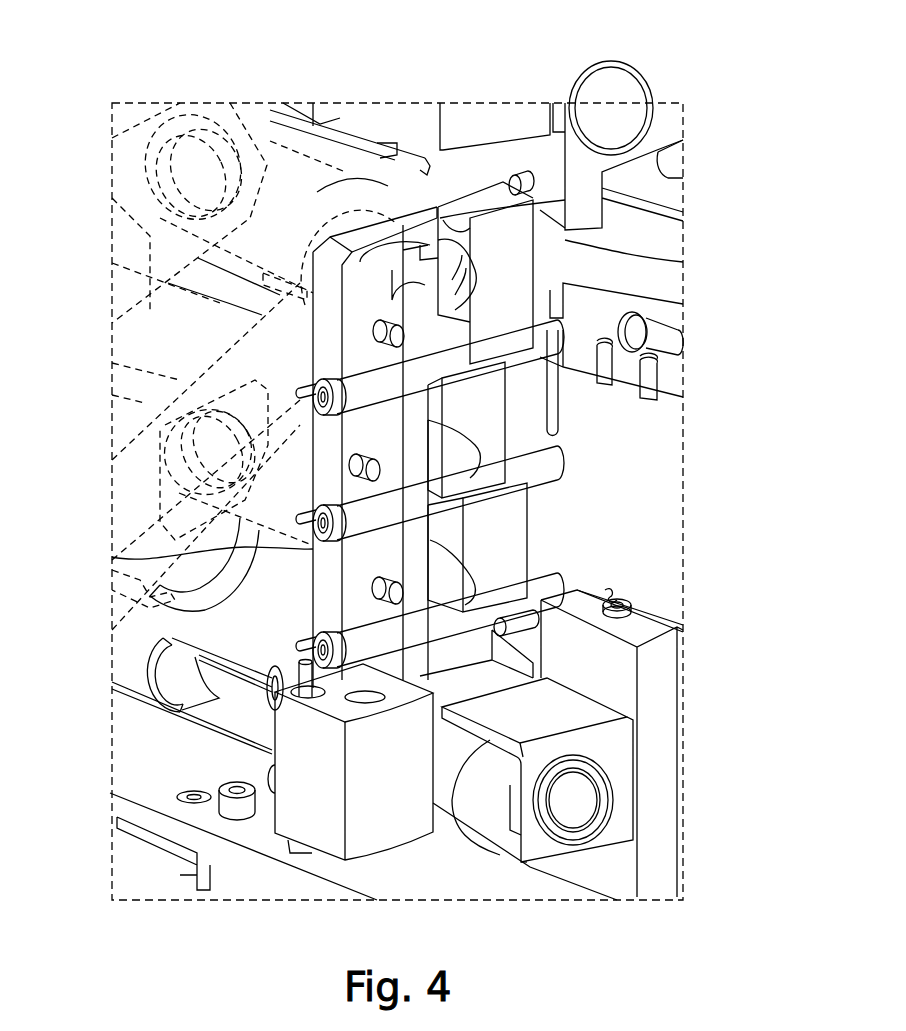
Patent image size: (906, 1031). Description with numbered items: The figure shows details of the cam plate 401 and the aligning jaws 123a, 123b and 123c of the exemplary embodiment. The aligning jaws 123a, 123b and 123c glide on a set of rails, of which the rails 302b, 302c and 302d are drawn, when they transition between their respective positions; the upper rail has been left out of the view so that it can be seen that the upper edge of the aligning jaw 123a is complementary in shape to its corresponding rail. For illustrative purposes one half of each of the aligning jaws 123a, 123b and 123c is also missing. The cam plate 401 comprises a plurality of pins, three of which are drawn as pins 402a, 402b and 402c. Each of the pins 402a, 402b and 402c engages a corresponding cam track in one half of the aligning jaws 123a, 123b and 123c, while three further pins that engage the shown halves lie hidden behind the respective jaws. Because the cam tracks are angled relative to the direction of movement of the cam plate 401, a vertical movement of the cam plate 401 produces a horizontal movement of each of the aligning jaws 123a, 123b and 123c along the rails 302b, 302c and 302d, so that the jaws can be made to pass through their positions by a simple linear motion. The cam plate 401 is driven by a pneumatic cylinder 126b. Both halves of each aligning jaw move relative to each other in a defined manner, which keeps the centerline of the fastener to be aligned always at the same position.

The cam plate 401 is at (382, 258).
The pin 402a is at (380, 328).
The pin 402b is at (356, 465).
The pin 402c is at (378, 588).
The aligning jaw 123a is at (508, 270).
The aligning jaw 123b is at (487, 417).
The aligning jaw 123c is at (487, 537).
The rail 302b is at (540, 338).
The rail 302c is at (537, 467).
The rail 302d is at (538, 587).
The pneumatic cylinder 126b is at (325, 822).